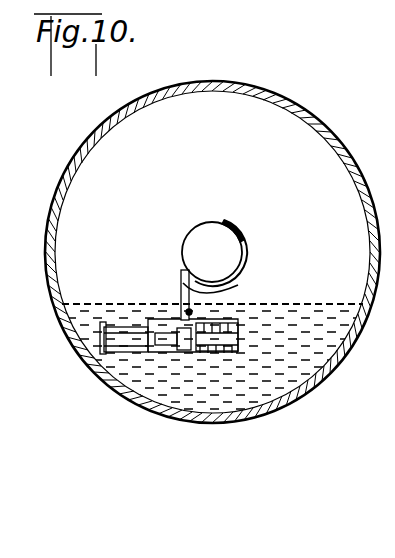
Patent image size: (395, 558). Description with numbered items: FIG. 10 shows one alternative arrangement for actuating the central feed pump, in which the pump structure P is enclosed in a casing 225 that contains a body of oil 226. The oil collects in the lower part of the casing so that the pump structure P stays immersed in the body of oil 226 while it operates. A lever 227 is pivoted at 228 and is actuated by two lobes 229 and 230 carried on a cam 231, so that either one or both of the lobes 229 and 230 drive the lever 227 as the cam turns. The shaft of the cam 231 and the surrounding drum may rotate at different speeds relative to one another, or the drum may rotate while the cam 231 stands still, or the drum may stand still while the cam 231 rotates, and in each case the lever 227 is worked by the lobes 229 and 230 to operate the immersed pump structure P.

The casing 225 is at (262, 407).
The body of oil 226 is at (196, 385).
The lever 227 is at (182, 298).
The pivot 228 is at (202, 302).
The lobe 229 is at (182, 273).
The lobe 230 is at (236, 219).
The cam 231 is at (204, 232).
The pump structure P is at (118, 370).